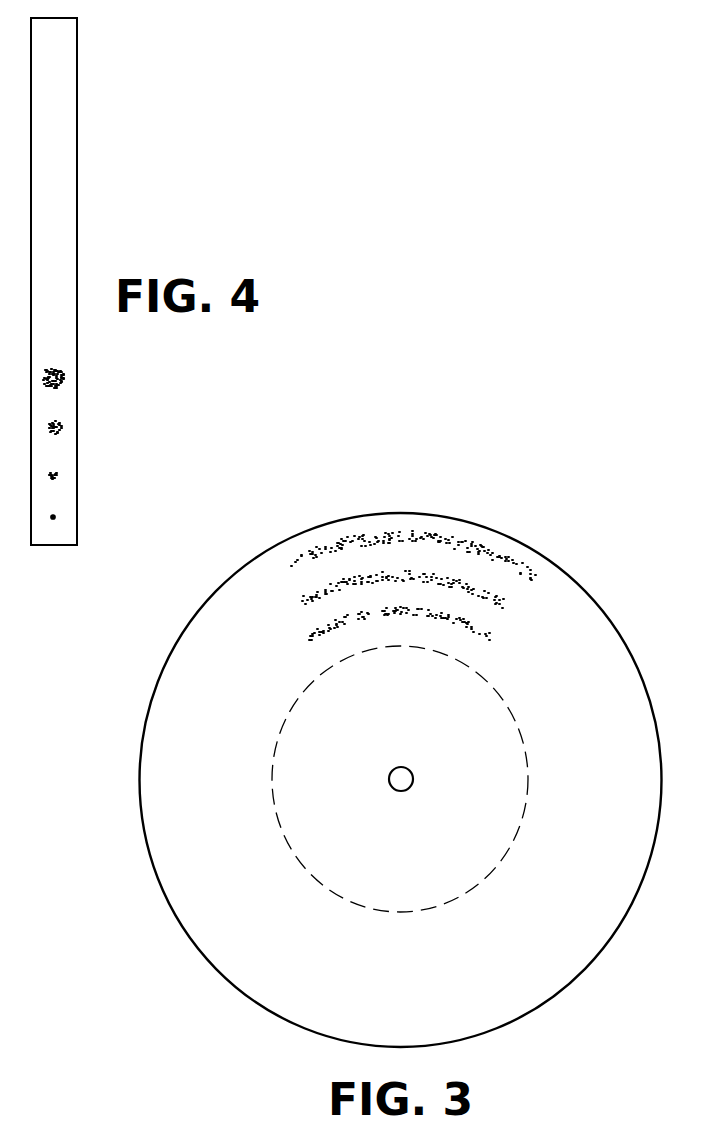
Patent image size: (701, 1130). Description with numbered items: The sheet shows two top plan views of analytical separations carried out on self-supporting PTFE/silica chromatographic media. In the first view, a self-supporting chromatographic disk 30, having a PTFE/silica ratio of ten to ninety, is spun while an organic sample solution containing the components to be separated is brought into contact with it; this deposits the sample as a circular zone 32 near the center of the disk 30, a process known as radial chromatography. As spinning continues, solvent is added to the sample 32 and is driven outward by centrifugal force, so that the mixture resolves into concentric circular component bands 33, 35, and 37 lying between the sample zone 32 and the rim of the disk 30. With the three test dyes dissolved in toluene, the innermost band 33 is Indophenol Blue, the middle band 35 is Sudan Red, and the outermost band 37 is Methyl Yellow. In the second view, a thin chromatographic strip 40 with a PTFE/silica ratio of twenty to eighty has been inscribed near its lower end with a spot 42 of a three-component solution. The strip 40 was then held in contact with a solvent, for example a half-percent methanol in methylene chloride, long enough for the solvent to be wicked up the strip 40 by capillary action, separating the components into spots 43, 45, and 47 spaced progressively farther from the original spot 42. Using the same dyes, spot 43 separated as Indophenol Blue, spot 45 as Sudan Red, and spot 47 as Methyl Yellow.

In FIG. 3, the self-supporting chromatographic disk 30 is at (155, 867).
In FIG. 3, the circular zone of deposited sample 32 is at (463, 663).
In FIG. 3, the Indophenol Blue band 33 is at (485, 633).
In FIG. 3, the Sudan Red band 35 is at (505, 607).
In FIG. 3, the Methyl Yellow band 37 is at (500, 555).
In FIG. 4, the chromatographic strip 40 is at (78, 175).
In FIG. 4, the spot 42 is at (55, 517).
In FIG. 4, the Indophenol Blue spot 43 is at (58, 475).
In FIG. 4, the Sudan Red spot 45 is at (63, 427).
In FIG. 4, the Methyl Yellow spot 47 is at (65, 378).